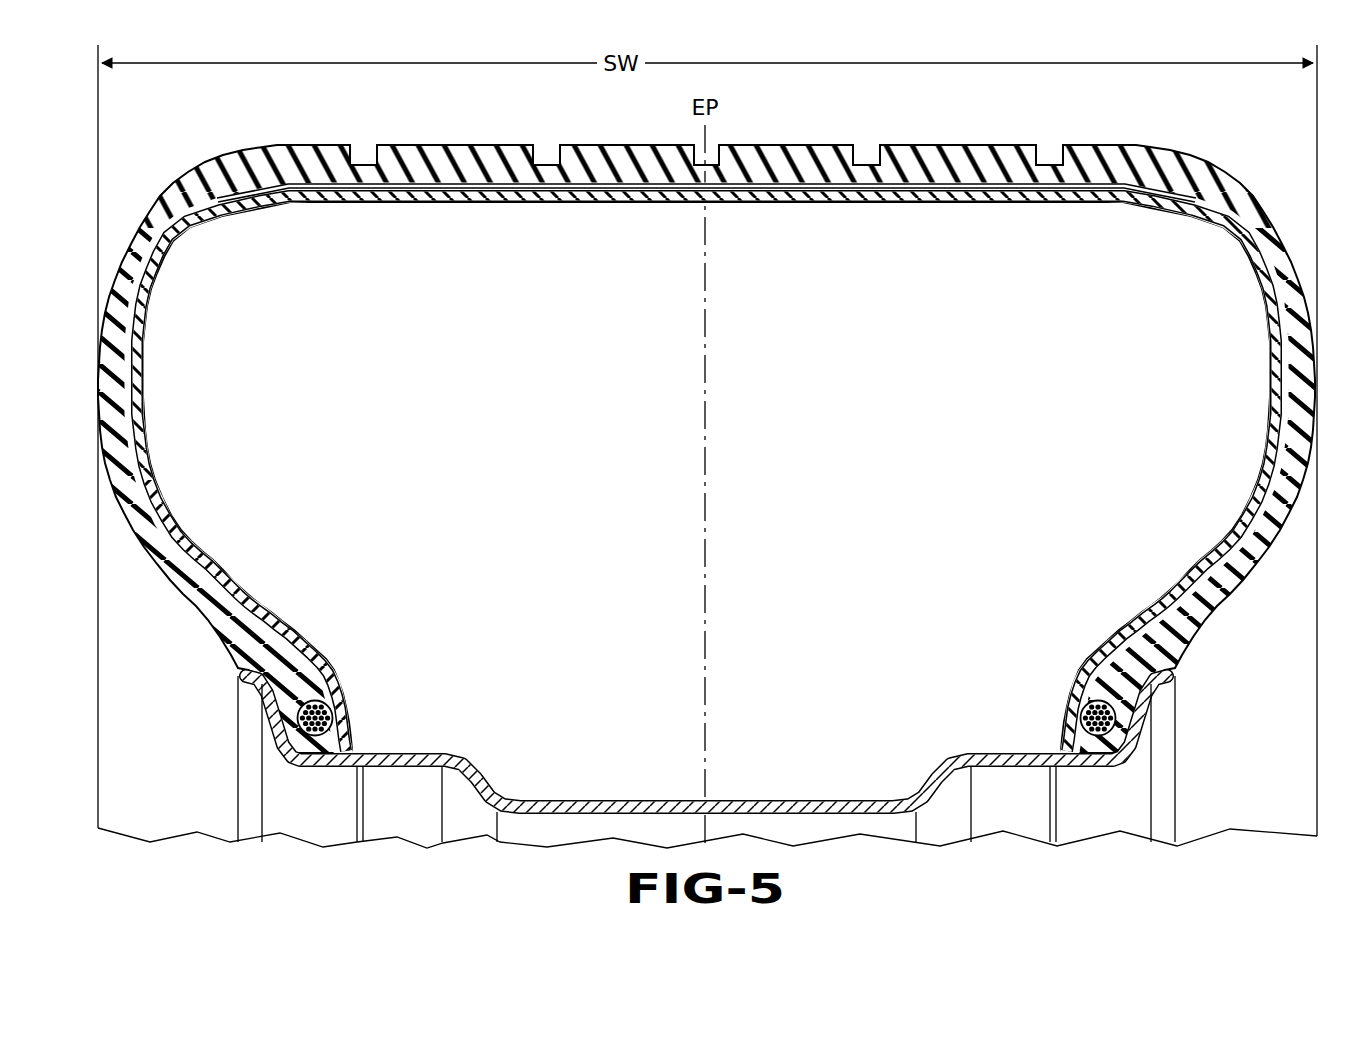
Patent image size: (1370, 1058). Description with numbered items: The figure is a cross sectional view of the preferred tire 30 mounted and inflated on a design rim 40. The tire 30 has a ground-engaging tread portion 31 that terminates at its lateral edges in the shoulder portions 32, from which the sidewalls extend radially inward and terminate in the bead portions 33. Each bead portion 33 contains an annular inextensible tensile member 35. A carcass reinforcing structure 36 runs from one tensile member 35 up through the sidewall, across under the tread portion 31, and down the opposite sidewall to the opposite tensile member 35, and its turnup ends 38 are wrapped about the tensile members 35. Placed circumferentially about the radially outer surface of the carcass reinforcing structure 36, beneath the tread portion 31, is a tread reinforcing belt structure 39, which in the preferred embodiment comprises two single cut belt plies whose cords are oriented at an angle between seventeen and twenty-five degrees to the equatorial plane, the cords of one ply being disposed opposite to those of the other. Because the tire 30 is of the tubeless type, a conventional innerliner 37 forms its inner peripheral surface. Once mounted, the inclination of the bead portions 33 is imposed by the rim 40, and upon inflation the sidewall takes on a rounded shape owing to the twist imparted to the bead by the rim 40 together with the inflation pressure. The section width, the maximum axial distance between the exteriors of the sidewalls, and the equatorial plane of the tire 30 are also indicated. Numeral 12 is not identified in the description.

The pneumatic tire 12 is at (1281, 545).
The tire 30 is at (528, 208).
The tread portion 31 is at (437, 137).
The shoulder portion 32 is at (1251, 178).
The bead portion 33 is at (336, 672).
The annular tensile member 35 is at (333, 715).
The carcass reinforcing structure 36 is at (1213, 577).
The innerliner 37 is at (954, 192).
The turnup ends 38 is at (1204, 622).
The belt structure 39 is at (954, 183).
The rim 40 is at (546, 806).